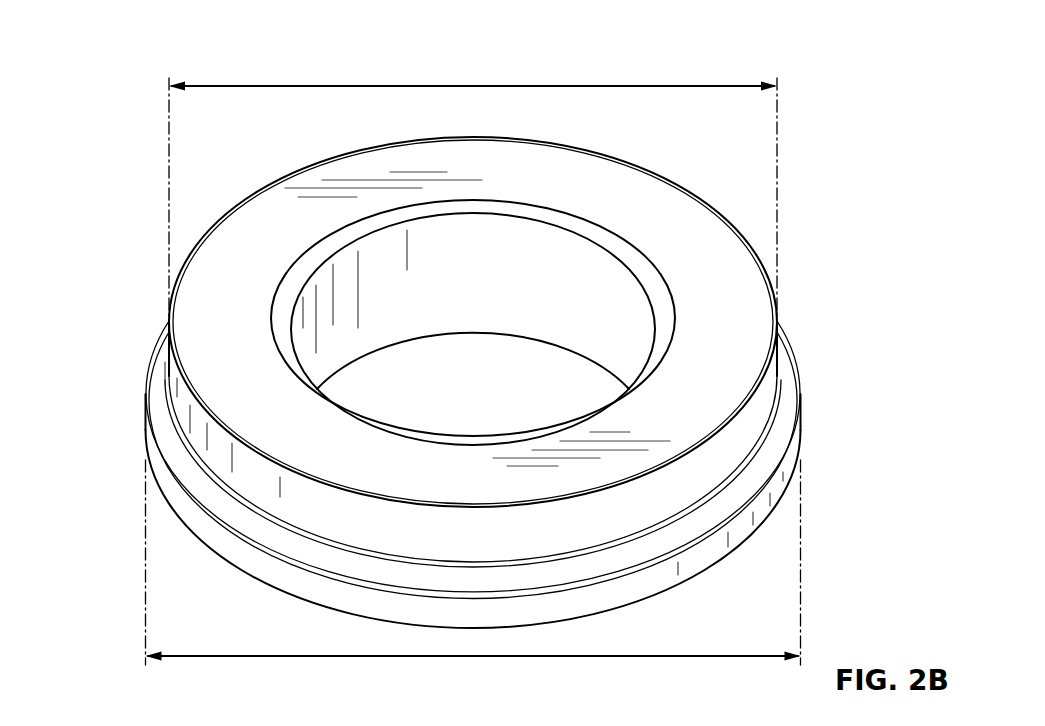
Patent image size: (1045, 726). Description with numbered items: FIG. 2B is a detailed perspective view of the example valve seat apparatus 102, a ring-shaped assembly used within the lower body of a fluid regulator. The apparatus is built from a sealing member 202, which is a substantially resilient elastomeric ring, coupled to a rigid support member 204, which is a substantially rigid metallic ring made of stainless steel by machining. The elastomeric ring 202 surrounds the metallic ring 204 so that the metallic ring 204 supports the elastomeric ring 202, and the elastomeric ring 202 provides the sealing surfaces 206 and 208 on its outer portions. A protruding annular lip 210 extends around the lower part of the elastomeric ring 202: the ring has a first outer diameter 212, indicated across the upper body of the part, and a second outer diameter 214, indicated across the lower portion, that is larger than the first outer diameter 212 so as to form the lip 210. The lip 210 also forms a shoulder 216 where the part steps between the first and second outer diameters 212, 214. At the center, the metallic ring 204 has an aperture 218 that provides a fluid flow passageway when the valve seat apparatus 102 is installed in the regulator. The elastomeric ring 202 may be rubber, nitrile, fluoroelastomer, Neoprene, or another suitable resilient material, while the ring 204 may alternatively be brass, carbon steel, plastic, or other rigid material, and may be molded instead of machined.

The valve seat apparatus 102 is at (130, 57).
The sealing member 202 is at (192, 315).
The rigid support member 204 is at (638, 268).
The sealing surface 206 is at (722, 238).
The sealing surface 208 is at (767, 383).
The annular lip 210 is at (252, 563).
The first outer diameter 212 is at (477, 86).
The second outer diameter 214 is at (473, 656).
The shoulder 216 is at (368, 574).
The aperture 218 is at (507, 345).